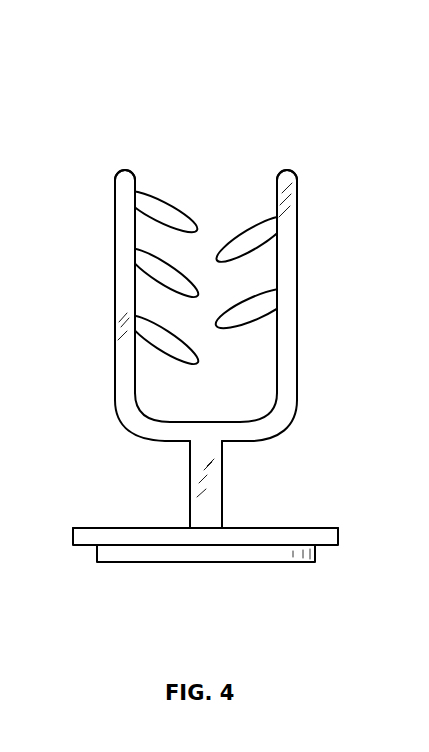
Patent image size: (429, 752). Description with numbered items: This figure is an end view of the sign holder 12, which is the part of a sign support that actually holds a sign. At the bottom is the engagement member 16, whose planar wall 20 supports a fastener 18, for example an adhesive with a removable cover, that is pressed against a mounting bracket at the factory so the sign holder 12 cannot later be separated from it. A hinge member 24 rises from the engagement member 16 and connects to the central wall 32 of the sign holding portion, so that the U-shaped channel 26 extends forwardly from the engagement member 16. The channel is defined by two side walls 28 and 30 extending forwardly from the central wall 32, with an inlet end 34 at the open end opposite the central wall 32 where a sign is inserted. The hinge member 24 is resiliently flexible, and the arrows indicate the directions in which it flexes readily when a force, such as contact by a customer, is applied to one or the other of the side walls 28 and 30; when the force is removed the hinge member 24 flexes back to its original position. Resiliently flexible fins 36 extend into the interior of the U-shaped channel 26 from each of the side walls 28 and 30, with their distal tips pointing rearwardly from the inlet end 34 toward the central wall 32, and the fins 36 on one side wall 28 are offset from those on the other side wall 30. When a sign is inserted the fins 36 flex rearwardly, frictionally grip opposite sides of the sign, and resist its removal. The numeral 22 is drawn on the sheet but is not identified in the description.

The sign holder 12 is at (98, 68).
The engagement member 16 is at (283, 534).
The fastener 18 is at (147, 553).
The planar wall 20 is at (127, 543).
The second arm 22 is at (310, 182).
The hinge member 24 is at (215, 507).
The U-shaped channel 26 is at (189, 146).
The side wall 28 is at (57, 363).
The side wall 30 is at (358, 366).
The central wall 32 is at (155, 431).
The inlet end 34 is at (241, 162).
The fins 36 is at (162, 203).